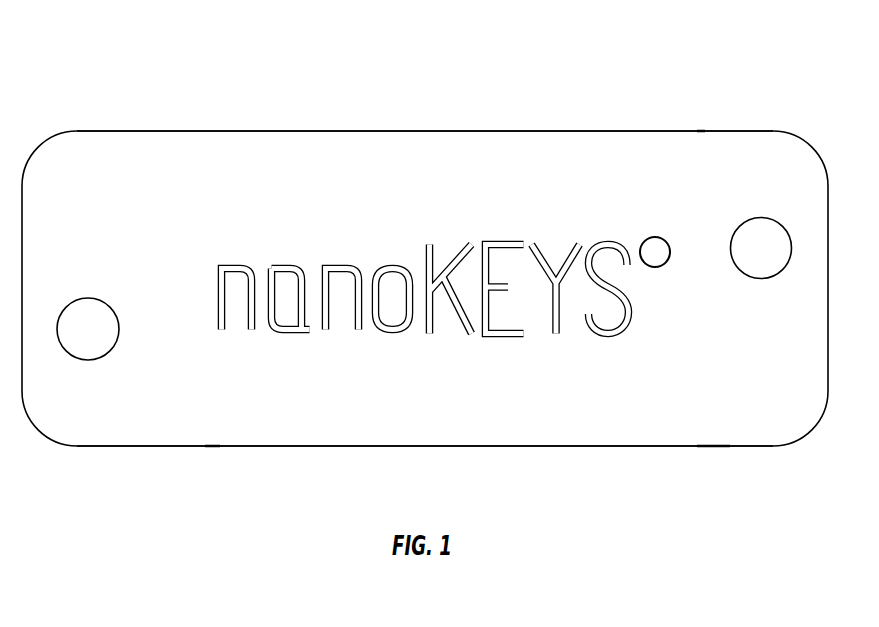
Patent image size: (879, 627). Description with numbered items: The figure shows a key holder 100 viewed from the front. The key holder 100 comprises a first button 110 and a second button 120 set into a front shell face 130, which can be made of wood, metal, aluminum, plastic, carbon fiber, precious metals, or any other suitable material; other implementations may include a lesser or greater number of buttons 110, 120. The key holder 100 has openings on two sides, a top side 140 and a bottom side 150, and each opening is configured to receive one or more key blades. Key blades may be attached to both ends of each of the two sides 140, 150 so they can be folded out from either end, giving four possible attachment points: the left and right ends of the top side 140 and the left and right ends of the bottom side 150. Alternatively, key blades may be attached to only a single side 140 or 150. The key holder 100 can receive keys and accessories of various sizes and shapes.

The key holder 100 is at (226, 66).
The first button 110 is at (82, 334).
The second button 120 is at (763, 240).
The front shell face 130 is at (503, 402).
The top side 140 is at (427, 131).
The bottom side 150 is at (349, 446).